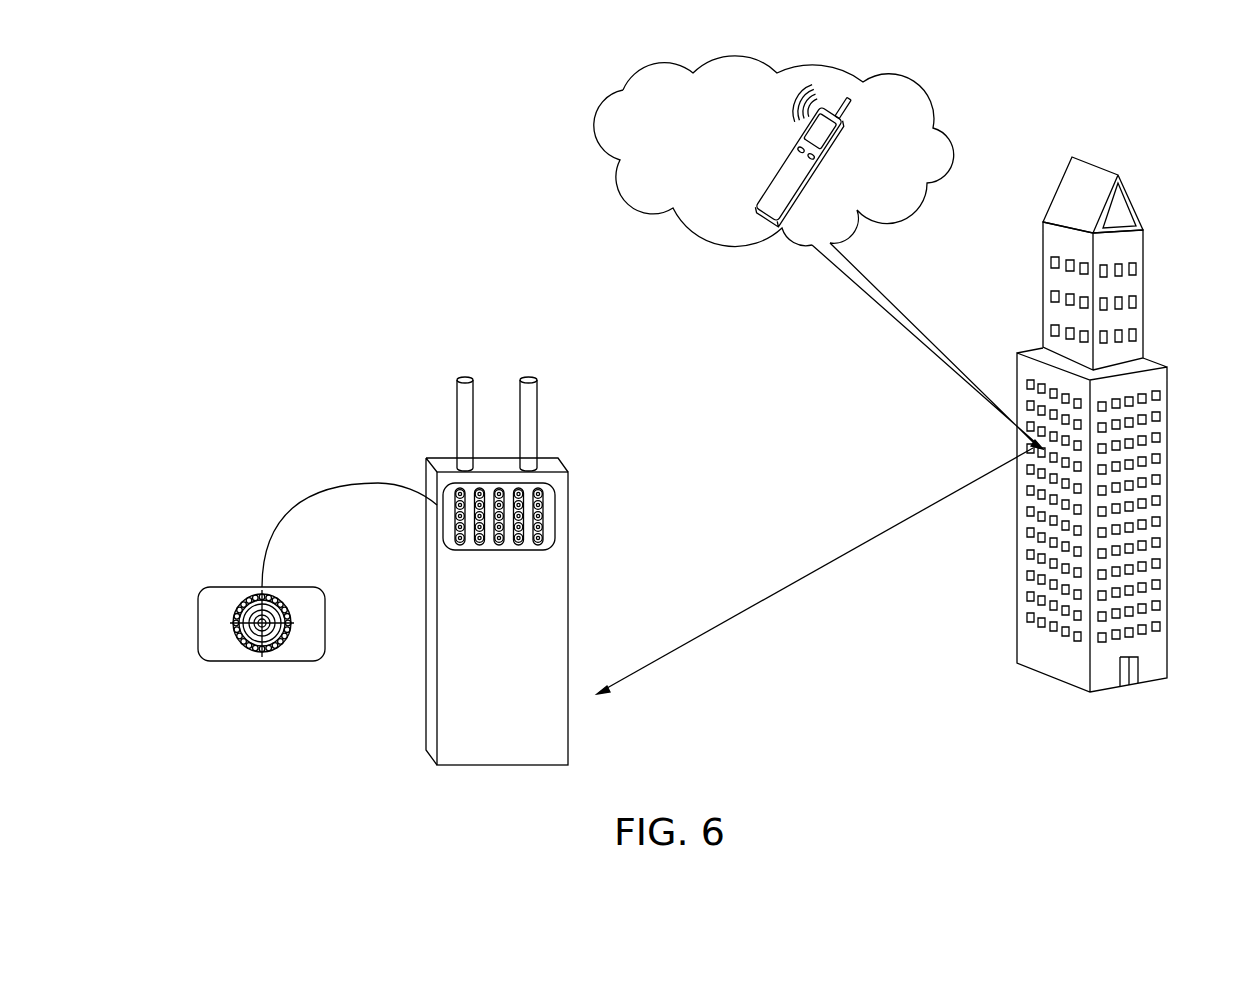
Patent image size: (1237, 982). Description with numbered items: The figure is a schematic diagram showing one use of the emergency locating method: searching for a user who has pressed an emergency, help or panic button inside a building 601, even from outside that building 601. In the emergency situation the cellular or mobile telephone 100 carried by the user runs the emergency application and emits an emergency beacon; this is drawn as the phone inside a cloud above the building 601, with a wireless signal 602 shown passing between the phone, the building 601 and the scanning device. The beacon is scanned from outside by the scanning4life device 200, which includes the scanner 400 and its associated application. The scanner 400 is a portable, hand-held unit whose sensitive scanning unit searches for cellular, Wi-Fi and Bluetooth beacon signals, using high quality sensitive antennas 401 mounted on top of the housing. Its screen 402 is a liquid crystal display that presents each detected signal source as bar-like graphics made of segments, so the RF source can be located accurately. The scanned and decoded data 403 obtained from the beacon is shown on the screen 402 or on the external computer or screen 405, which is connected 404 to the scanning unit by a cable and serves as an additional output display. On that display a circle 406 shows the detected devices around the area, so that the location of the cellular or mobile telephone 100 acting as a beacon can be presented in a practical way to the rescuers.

The cellular or mobile telephone 100 is at (803, 167).
The scanning4life device 200 is at (426, 571).
The scanner 400 is at (563, 463).
The sensitive antennas 401 is at (530, 415).
The screen with bar-like graphics 402 is at (543, 497).
The scanned and decoded data 403 is at (543, 520).
The connection to computer unit 404 is at (307, 503).
The external computer or screen 405 is at (322, 592).
The circle 406 is at (285, 633).
The building 601 is at (1133, 203).
The wireless signal 602 is at (826, 567).